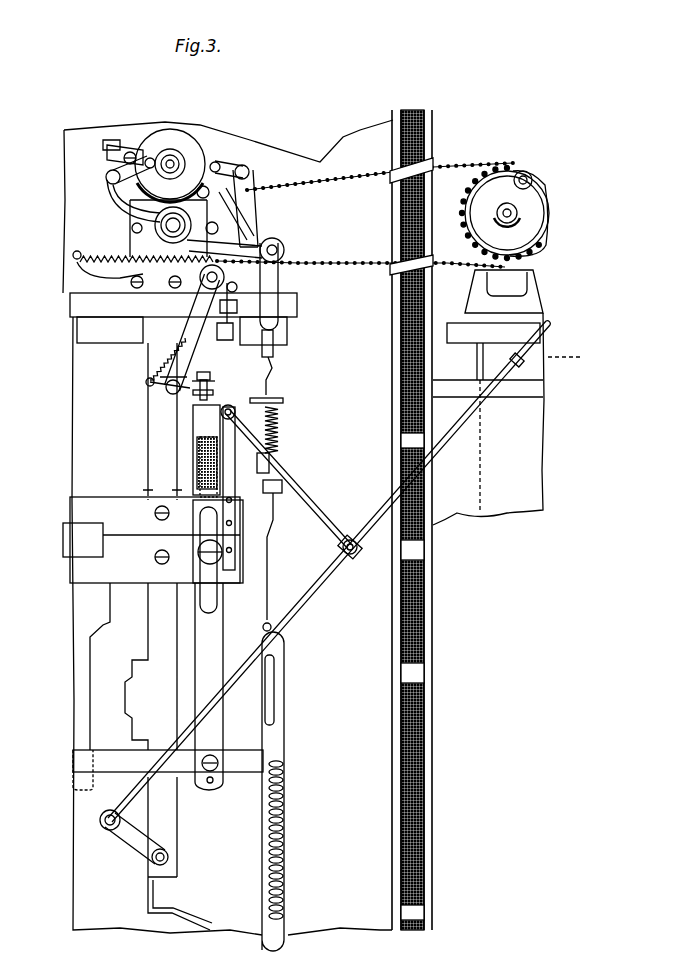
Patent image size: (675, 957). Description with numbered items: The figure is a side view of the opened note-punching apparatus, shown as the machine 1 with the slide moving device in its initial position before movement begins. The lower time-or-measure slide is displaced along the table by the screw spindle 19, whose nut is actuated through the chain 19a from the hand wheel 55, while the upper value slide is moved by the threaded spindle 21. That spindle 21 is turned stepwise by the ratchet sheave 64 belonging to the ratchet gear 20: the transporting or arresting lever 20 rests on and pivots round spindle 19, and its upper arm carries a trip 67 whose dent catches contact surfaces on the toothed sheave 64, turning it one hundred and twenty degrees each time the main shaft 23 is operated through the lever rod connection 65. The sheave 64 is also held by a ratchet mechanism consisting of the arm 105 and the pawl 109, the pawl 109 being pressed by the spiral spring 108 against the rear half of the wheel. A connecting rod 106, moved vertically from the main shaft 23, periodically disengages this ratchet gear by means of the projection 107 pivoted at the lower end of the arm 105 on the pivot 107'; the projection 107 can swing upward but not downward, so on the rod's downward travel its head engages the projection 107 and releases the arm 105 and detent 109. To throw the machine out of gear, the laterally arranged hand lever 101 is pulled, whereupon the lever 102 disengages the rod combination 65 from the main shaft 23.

The machine frame 1 is at (447, 513).
The screw spindle 19 is at (207, 249).
The chain 19a is at (343, 257).
The transporting or arresting lever 20 is at (113, 188).
The screw spindle 21 is at (234, 195).
The main shaft 23 is at (168, 776).
The hand wheel 55 is at (470, 210).
The ratchet sheave 64 is at (180, 143).
The lever rod connection 65 is at (195, 798).
The trip 67 is at (118, 148).
The hand lever 101 is at (313, 597).
The lever 102 is at (138, 845).
The arm 105 is at (233, 210).
The connecting rod 106 is at (207, 650).
The projection 107 is at (150, 374).
The pivot 107' is at (166, 352).
The spiral spring 108 is at (140, 244).
The pawl 109 is at (208, 165).